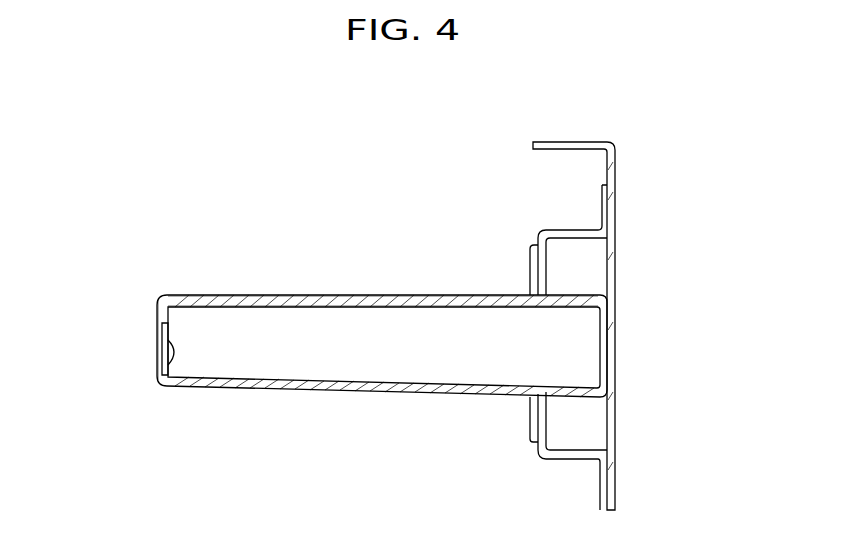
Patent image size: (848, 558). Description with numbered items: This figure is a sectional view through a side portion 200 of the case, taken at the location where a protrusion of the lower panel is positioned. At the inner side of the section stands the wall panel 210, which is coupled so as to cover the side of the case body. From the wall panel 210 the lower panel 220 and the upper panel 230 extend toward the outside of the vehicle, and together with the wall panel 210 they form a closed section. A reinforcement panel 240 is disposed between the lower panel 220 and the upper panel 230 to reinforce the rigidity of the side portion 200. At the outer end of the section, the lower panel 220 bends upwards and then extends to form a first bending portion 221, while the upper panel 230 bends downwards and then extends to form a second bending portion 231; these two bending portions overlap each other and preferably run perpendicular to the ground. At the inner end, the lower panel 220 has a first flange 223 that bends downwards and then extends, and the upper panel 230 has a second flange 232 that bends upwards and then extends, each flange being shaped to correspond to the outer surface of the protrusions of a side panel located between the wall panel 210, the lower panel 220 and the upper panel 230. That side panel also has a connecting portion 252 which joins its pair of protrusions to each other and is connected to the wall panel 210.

The side portion 200 is at (220, 126).
The wall panel 210 is at (615, 482).
The lower panel 220 is at (243, 399).
The first bending portion 221 is at (160, 360).
The first flange 223 is at (532, 421).
The upper panel 230 is at (243, 290).
The second bending portion 231 is at (157, 310).
The second flange 232 is at (532, 262).
The reinforcement panel 240 is at (352, 303).
The connecting portion 252 is at (612, 255).